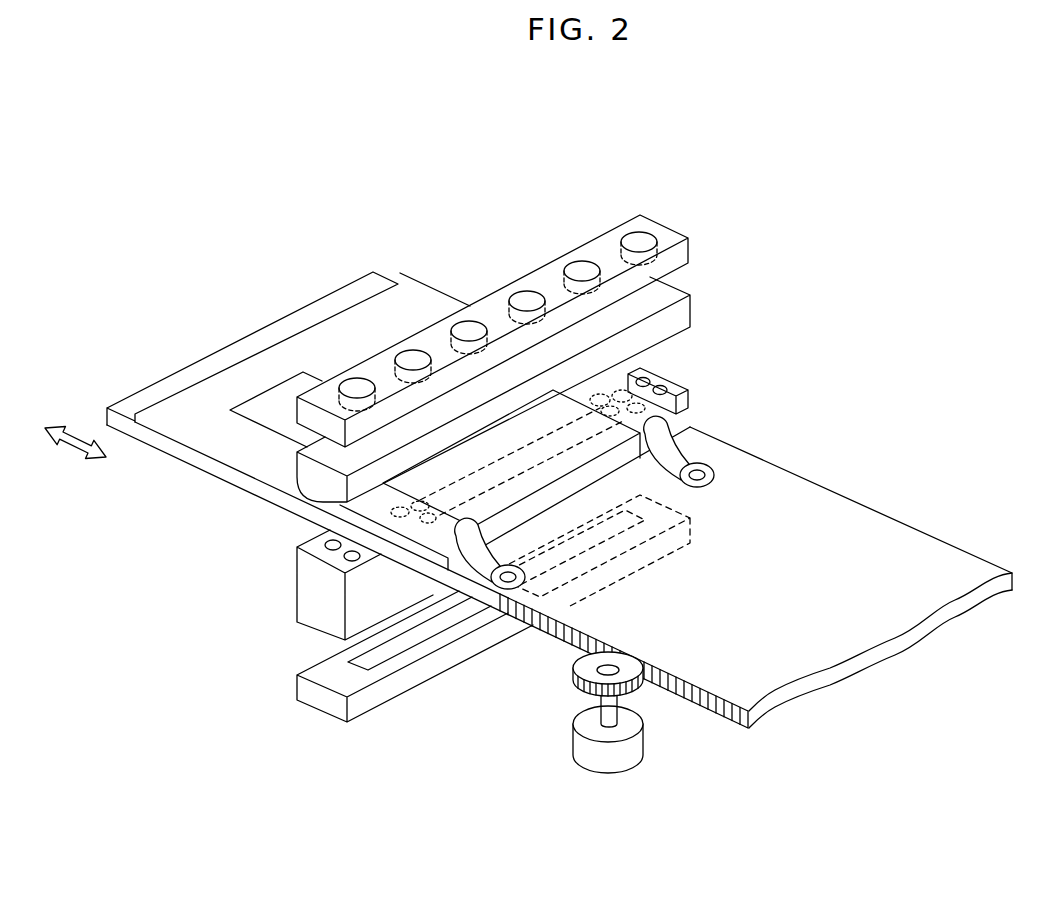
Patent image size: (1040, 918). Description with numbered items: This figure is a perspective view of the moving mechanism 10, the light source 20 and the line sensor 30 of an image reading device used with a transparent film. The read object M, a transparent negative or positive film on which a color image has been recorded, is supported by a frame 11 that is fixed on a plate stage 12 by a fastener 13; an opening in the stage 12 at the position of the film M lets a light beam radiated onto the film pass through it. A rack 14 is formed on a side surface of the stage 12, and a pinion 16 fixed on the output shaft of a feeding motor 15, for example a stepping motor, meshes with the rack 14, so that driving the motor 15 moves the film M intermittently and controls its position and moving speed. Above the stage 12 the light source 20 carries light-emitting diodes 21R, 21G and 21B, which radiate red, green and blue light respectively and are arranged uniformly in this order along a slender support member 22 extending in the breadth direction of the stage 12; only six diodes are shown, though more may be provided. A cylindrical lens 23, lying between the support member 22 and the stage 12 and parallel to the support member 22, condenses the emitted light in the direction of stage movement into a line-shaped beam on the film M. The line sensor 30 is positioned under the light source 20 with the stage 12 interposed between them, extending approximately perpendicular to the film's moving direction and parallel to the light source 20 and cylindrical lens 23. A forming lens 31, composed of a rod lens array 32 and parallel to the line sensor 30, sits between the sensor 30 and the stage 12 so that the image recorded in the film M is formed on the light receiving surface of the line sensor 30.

The moving mechanism 10 is at (556, 765).
The frame 11 is at (205, 393).
The plate stage 12 is at (837, 518).
The fastener 13 is at (710, 447).
The rack 14 is at (727, 707).
The feeding motor 15 is at (607, 760).
The pinion 16 is at (583, 670).
The light source 20 is at (532, 320).
The light-emitting diode 21R is at (633, 237).
The light-emitting diode 21G is at (582, 267).
The light-emitting diode 21B is at (523, 297).
The support member 22 is at (531, 292).
The cylindrical lens 23 is at (670, 297).
The line sensor 30 is at (322, 705).
The forming lens 31 is at (682, 392).
The rod lens array 32 is at (323, 536).
The read object M is at (313, 377).